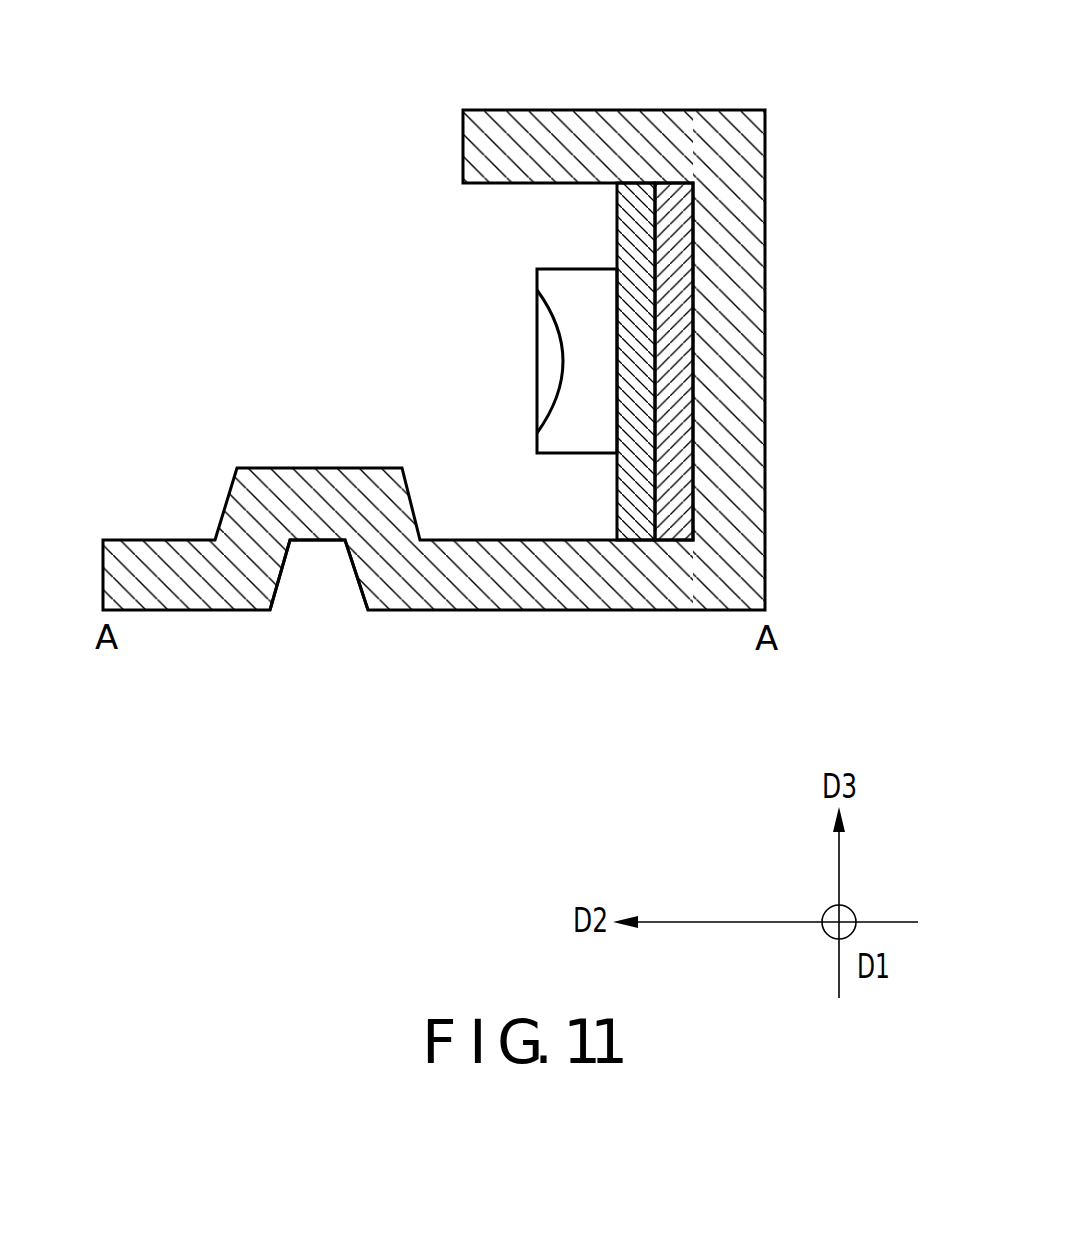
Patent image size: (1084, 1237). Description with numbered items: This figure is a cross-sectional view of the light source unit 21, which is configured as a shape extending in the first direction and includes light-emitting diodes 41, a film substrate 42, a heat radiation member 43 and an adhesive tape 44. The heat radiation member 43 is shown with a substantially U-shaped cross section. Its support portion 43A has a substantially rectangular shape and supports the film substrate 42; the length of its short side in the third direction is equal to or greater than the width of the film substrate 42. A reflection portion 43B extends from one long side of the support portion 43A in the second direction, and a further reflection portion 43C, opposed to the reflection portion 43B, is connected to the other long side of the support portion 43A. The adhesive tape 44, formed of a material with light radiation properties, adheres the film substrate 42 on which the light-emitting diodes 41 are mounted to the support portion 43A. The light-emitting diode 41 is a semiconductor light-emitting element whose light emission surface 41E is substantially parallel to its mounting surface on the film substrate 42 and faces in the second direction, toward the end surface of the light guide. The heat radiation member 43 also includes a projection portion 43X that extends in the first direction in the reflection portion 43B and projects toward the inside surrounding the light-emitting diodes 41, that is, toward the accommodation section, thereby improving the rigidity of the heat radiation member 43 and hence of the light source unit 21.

The light source unit 21 is at (486, 418).
The light-emitting diode 41 is at (514, 330).
The light emission surface 41E is at (537, 345).
The film substrate 42 is at (628, 515).
The heat radiation member 43 is at (486, 349).
The support portion 43A is at (735, 255).
The reflection portion 43B is at (525, 585).
The reflection portion 43C is at (555, 132).
The projection portion 43X is at (320, 543).
The adhesive tape 44 is at (680, 515).